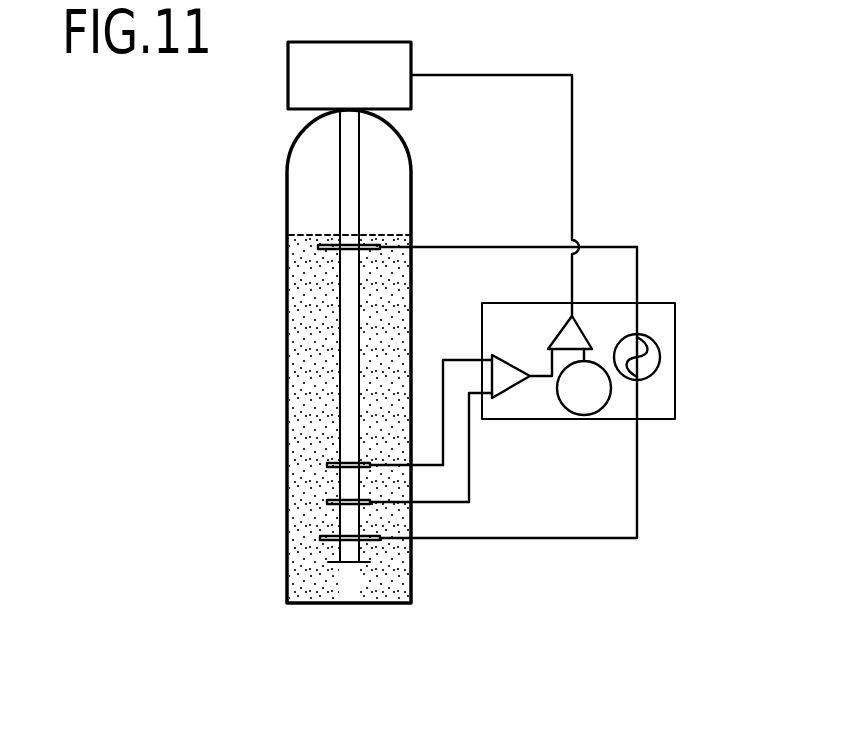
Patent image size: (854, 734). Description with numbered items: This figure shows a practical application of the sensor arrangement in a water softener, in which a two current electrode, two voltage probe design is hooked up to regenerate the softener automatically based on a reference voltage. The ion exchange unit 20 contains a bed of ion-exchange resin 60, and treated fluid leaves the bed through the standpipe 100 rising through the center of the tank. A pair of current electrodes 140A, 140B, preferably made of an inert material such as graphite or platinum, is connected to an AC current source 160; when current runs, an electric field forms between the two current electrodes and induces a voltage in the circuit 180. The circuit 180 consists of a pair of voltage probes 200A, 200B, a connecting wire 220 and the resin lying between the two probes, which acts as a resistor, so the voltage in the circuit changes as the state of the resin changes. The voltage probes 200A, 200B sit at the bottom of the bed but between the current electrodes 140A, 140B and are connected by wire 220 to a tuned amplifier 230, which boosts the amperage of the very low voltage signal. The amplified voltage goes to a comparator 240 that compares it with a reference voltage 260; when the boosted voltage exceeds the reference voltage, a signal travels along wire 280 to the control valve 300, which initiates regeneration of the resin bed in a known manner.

The ion exchange unit 20 is at (268, 186).
The ion-exchange resin 60 is at (315, 342).
The standpipe 100 is at (352, 575).
The current electrode 140A is at (318, 248).
The current electrode 140B is at (320, 539).
The AC current source 160 is at (660, 352).
The circuit 180 is at (382, 482).
The voltage probe 200A is at (327, 466).
The voltage probe 200B is at (327, 503).
The connecting wire 220 is at (443, 358).
The tuned amplifier 230 is at (507, 398).
The comparator 240 is at (582, 333).
The reference voltage 260 is at (603, 412).
The wire 280 is at (573, 135).
The control valve 300 is at (412, 58).